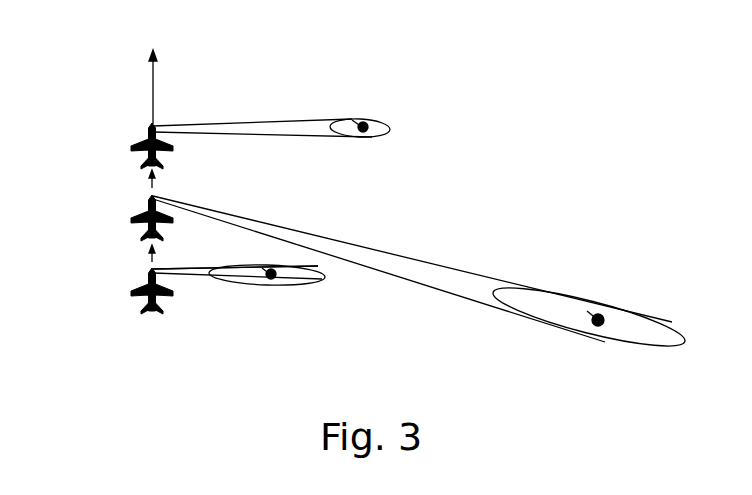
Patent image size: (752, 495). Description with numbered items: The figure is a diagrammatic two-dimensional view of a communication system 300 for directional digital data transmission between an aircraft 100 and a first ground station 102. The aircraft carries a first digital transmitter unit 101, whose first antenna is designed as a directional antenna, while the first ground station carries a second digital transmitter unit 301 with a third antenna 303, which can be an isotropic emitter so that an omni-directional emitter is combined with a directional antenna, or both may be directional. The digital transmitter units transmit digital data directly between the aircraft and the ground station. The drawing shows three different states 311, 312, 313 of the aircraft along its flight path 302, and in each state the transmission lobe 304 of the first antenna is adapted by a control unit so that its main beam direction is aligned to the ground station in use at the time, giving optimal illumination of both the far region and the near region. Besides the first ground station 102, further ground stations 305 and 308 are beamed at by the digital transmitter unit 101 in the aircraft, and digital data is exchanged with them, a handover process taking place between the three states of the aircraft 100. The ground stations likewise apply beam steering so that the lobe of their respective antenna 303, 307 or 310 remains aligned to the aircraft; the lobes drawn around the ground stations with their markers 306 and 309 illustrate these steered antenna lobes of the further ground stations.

The aircraft 100 is at (105, 333).
The first digital transmitter unit 101 is at (157, 268).
The first ground station 102 is at (275, 281).
The communication system 300 is at (244, 102).
The second digital transmitter unit 301 is at (263, 280).
The flight path 302 is at (150, 84).
The third antenna 303 is at (268, 272).
The transmission lobe 304 is at (393, 136).
The further ground station 305 is at (599, 327).
The position uncertainty ellipse 306 is at (585, 326).
The antenna of the ground station 307 is at (594, 315).
The further ground station 308 is at (345, 131).
The predicted position 309 is at (364, 120).
The antenna of the ground station 310 is at (357, 121).
The first state of the aircraft 311 is at (142, 301).
The second state of the aircraft 312 is at (156, 197).
The third state of the aircraft 313 is at (142, 145).